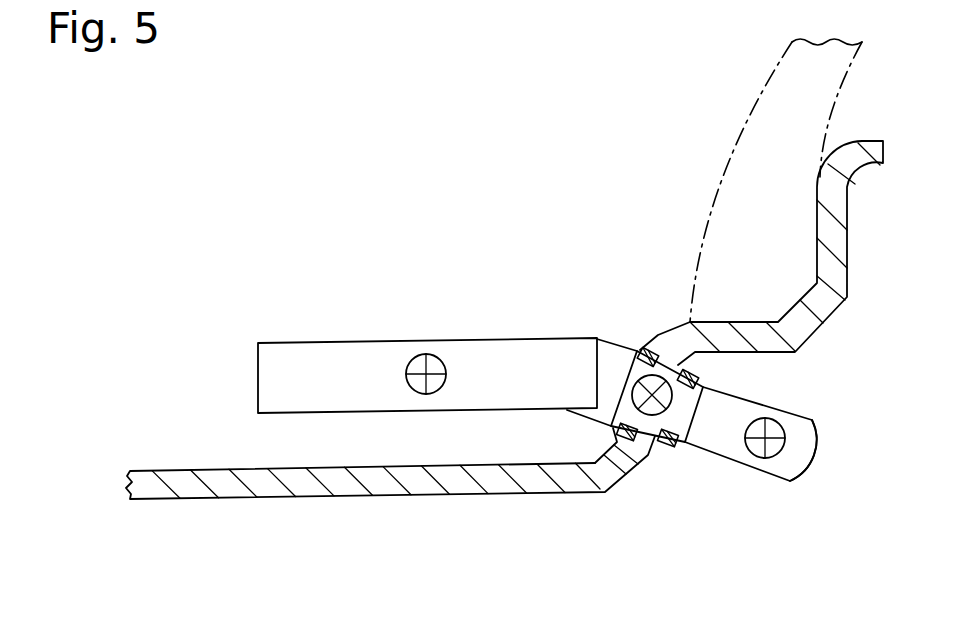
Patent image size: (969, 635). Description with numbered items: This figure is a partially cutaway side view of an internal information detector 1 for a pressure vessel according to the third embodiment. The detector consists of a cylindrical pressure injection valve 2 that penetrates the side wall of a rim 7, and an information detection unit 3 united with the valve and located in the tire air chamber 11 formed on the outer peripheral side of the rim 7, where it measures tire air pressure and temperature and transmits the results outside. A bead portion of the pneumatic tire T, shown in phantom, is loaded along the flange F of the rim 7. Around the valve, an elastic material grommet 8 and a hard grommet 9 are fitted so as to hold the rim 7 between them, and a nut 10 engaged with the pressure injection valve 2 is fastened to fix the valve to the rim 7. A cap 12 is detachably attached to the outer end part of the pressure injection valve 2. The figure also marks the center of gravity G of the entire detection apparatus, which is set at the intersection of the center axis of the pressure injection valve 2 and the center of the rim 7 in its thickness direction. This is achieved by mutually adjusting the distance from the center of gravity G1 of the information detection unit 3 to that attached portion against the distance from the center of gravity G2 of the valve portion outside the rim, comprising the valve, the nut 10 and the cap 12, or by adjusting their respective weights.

The internal information detector 1 is at (283, 343).
The pressure injection valve 2 is at (683, 409).
The information detection unit 3 is at (340, 353).
The rim 7 is at (185, 483).
The elastic material grommet 8 is at (650, 343).
The hard grommet 9 is at (662, 442).
The nut 10 is at (672, 442).
The tire air chamber 11 is at (443, 178).
The cap 12 is at (787, 462).
The flange F is at (838, 235).
The pneumatic tire T is at (770, 70).
The center of gravity G is at (615, 362).
The center of gravity of the information detection unit G1 is at (437, 353).
The center of gravity of the valve portion G2 is at (753, 458).